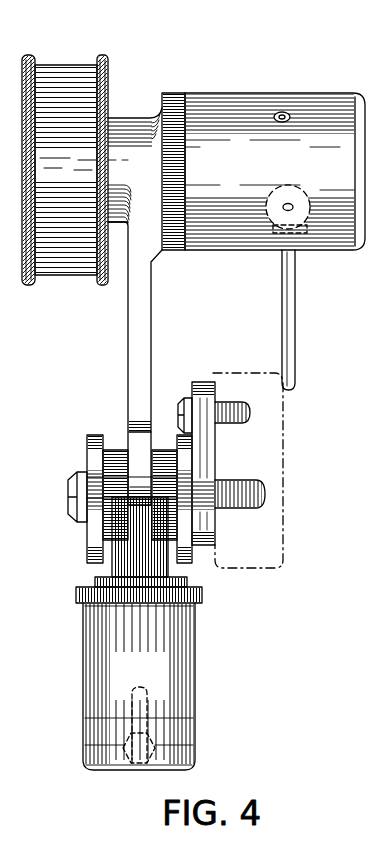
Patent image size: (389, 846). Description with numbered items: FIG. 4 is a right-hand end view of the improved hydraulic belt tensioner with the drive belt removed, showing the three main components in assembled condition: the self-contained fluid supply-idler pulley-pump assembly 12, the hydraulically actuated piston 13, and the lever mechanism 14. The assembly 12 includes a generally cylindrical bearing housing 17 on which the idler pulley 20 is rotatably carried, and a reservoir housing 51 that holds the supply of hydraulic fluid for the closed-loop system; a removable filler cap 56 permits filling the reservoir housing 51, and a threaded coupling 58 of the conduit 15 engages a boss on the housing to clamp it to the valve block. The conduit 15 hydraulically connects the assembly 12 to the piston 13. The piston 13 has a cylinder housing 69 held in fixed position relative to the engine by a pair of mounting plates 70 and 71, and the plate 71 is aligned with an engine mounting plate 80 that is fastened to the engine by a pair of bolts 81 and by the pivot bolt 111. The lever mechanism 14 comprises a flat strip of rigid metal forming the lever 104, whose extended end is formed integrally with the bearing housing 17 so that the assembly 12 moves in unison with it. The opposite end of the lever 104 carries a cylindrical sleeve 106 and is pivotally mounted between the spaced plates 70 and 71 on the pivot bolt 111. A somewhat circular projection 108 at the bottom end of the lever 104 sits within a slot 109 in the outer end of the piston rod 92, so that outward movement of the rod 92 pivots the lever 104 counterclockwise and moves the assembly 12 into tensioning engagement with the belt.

The fluid supply-idler pulley-pump assembly 12 is at (263, 168).
The hydraulically actuated piston 13 is at (198, 681).
The lever mechanism 14 is at (125, 412).
The conduit 15 is at (297, 331).
The bearing housing 17 is at (134, 118).
The idler pulley 20 is at (64, 60).
The reservoir housing 51 is at (322, 93).
The filler cap 56 is at (285, 112).
The threaded coupling 58 is at (303, 227).
The cylinder housing 69 is at (195, 729).
The mounting plate 70 is at (93, 447).
The mounting plate 71 is at (183, 457).
The engine mounting plate 80 is at (202, 386).
The bolts 81 is at (180, 400).
The piston rod 92 is at (160, 565).
The lever 104 is at (142, 290).
The cylindrical sleeve 106 is at (123, 448).
The circular projection 108 is at (138, 478).
The slot 109 is at (138, 507).
The pivot bolt 111 is at (77, 503).